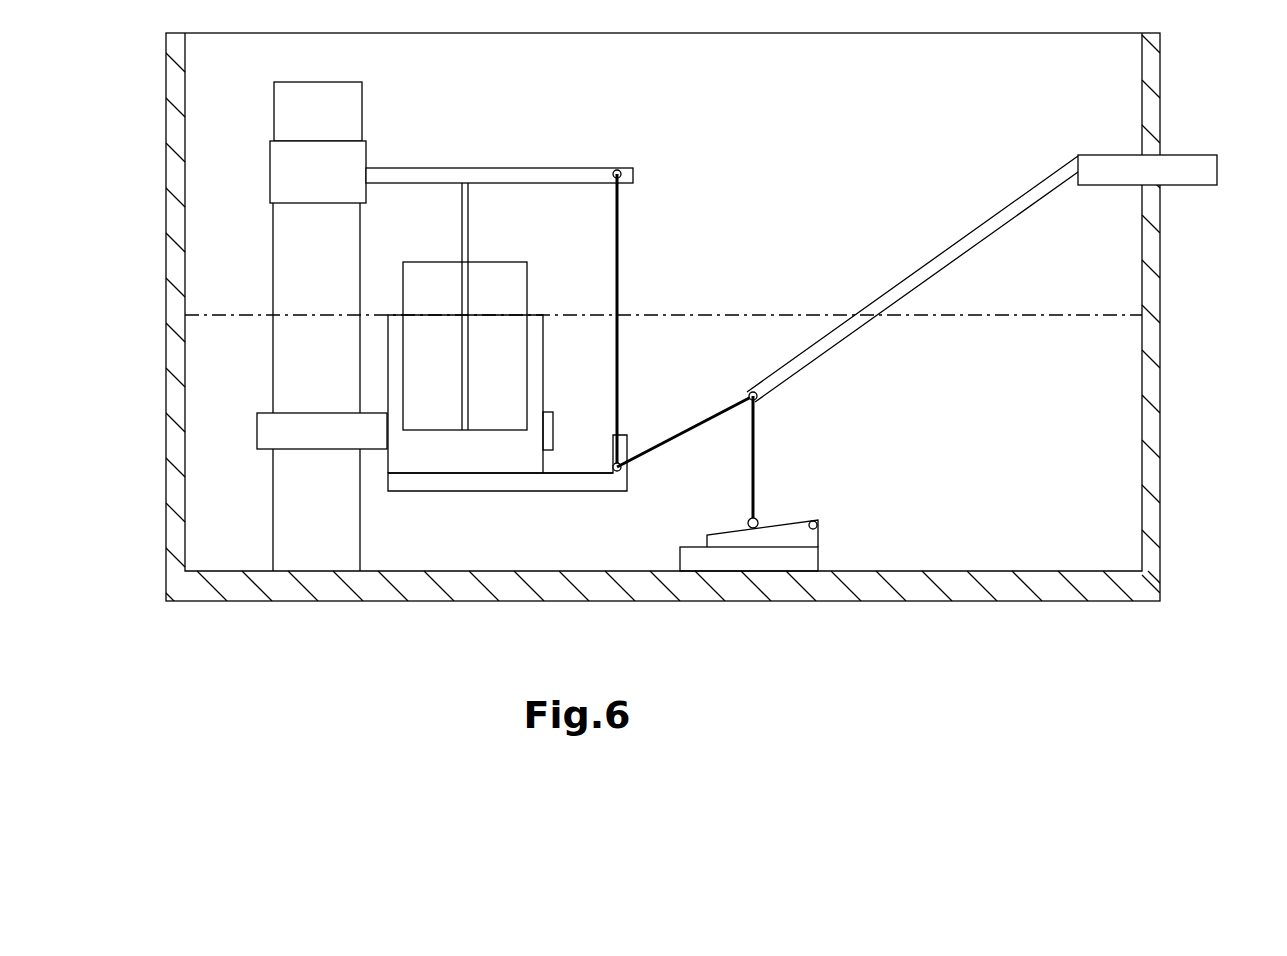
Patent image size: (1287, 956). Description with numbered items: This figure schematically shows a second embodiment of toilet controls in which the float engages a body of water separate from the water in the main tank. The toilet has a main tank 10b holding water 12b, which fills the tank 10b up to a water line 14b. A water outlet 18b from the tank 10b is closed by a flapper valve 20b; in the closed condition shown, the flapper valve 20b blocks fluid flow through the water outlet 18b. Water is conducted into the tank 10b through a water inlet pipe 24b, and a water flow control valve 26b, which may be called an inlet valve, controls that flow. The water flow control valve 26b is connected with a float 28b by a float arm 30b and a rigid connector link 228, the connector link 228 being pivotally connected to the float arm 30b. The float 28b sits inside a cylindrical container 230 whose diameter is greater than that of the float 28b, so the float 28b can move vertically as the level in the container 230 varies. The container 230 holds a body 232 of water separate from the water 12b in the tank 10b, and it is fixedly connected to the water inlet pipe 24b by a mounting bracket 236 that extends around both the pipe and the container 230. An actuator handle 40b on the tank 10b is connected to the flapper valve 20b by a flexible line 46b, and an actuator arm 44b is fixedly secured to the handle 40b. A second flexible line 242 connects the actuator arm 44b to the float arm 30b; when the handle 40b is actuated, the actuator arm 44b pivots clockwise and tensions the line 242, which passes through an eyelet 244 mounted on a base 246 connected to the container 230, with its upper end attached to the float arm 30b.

The main tank 10b is at (1172, 85).
The water 12b is at (1097, 413).
The water line 14b is at (1097, 315).
The water outlet 18b is at (762, 563).
The flapper valve 20b is at (785, 530).
The water inlet pipe 24b is at (302, 515).
The water flow control valve 26b is at (295, 180).
The float 28b is at (430, 360).
The float arm 30b is at (531, 176).
The actuator handle 40b is at (1175, 165).
The actuator arm 44b is at (937, 270).
The flexible line 46b is at (757, 452).
The rigid connector link 228 is at (468, 230).
The container 230 is at (395, 358).
The body of water 232 is at (420, 452).
The mounting bracket 236 is at (285, 433).
The second flexible line 242 is at (620, 346).
The eyelet 244 is at (615, 470).
The base 246 is at (442, 483).